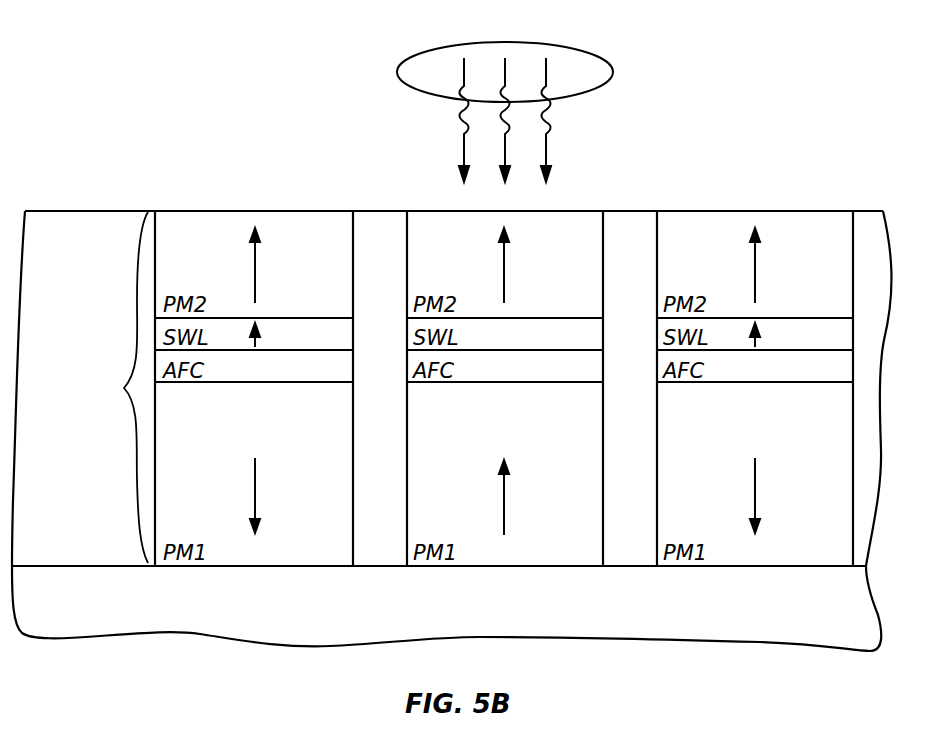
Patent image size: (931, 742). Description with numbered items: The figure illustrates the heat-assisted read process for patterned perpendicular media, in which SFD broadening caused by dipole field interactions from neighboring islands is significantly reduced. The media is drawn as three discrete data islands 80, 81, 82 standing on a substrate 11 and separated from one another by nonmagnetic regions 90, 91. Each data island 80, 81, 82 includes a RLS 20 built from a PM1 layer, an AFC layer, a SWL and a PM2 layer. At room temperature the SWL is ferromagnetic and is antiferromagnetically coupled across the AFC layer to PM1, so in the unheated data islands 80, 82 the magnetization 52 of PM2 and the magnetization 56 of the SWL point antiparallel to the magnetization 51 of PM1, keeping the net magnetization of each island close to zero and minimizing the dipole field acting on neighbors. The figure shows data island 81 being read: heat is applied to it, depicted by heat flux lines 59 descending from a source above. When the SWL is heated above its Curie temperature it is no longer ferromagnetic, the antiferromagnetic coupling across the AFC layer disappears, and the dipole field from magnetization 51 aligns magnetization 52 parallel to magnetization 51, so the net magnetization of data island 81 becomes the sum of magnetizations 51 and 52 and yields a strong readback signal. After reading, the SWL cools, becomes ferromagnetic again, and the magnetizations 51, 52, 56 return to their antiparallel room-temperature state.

The substrate 11 is at (135, 612).
The RLS 20 is at (88, 387).
The magnetization of PM1 51 is at (255, 508).
The magnetization of PM2 52 is at (255, 263).
The magnetization of SWL 56 is at (255, 343).
The heat flux lines 59 is at (443, 47).
The data island 80 is at (196, 218).
The data island 81 is at (451, 220).
The data island 82 is at (705, 220).
The nonmagnetic region 90 is at (378, 220).
The nonmagnetic region 91 is at (625, 220).